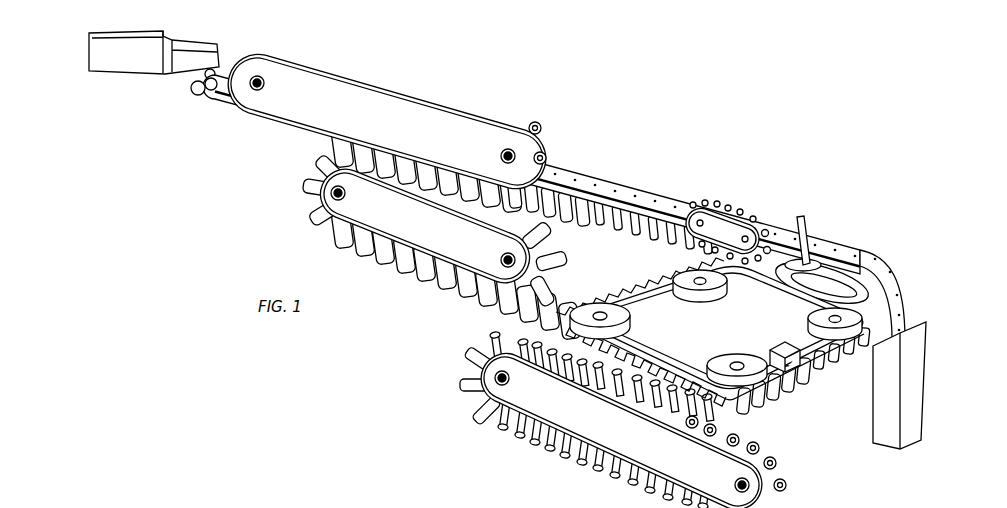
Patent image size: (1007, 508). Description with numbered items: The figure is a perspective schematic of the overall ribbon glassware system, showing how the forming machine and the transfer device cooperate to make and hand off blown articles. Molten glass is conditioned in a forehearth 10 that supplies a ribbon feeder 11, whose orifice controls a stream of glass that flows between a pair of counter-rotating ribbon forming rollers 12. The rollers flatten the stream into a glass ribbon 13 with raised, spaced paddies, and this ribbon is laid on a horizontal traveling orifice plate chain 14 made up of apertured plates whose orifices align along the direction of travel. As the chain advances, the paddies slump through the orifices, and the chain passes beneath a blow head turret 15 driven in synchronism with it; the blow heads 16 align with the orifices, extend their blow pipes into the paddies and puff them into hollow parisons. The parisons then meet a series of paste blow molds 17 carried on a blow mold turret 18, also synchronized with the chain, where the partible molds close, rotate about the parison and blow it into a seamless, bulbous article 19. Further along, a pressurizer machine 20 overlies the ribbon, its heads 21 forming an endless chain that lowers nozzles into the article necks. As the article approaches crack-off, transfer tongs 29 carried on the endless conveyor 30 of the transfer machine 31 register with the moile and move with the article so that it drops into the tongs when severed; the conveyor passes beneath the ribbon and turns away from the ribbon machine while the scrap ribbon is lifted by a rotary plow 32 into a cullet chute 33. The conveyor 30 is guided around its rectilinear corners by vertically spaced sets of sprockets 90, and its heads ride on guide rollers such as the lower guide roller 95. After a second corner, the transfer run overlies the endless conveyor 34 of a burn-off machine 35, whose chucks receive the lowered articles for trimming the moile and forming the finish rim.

The forehearth 10 is at (136, 63).
The ribbon feeder 11 is at (219, 72).
The ribbon forming rollers 12 is at (188, 87).
The glass ribbon 13 is at (227, 102).
The orifice plate chain 14 is at (290, 122).
The blow head turret 15 is at (388, 124).
The blow heads 16 is at (546, 135).
The paste blow molds 17 is at (548, 259).
The blow mold turret 18 is at (436, 230).
The article 19 is at (614, 233).
The pressurizer machine 20 is at (732, 205).
The heads 21 is at (762, 213).
The transfer tongs 29 is at (604, 293).
The endless conveyor 30 is at (756, 286).
The transfer machine 31 is at (797, 329).
The rotary plow 32 is at (819, 255).
The cullet chute 33 is at (888, 420).
The endless conveyor 34 is at (781, 466).
The burn-off machine 35 is at (640, 445).
The sprockets 90 is at (687, 287).
The lower guide roller 95 is at (442, 499).